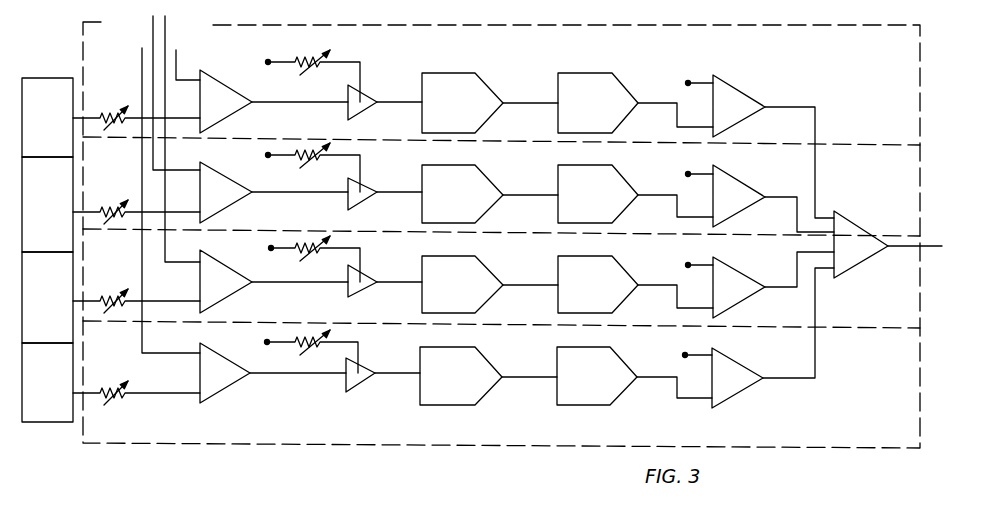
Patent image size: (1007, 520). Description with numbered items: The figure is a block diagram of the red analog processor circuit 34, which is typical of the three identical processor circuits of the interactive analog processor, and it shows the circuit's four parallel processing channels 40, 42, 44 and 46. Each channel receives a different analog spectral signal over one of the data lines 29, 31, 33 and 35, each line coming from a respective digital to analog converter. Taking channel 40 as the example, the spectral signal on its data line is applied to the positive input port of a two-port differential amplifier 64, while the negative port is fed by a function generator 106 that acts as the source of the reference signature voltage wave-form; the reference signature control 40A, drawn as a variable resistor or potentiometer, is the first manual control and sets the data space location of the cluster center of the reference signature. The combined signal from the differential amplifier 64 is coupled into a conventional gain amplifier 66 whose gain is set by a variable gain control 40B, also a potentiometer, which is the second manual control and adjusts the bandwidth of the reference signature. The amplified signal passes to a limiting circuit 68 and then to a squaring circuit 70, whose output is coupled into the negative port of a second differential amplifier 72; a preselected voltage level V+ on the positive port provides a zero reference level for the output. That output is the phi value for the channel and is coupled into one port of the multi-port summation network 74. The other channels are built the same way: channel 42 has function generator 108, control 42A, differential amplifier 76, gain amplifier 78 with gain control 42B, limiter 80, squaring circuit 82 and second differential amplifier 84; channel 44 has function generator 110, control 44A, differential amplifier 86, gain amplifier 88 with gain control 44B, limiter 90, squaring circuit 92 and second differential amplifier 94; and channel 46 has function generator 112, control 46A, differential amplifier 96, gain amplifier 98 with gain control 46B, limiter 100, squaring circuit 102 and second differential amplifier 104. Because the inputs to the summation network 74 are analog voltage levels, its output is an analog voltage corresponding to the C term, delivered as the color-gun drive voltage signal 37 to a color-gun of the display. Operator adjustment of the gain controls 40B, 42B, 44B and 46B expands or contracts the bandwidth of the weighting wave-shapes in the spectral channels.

The data line 29 is at (177, 62).
The data line 31 is at (165, 26).
The data line 33 is at (153, 24).
The data line 35 is at (142, 60).
The red processor circuit 34 is at (338, 458).
The color-gun drive voltage signal 37 is at (902, 248).
The parallel processing channel 40 is at (529, 53).
The parallel processing channel 42 is at (535, 177).
The parallel processing channel 44 is at (532, 268).
The parallel processing channel 46 is at (529, 350).
The reference signature control 40A is at (108, 116).
The reference signature control 42A is at (108, 210).
The reference signature control 44A is at (108, 299).
The reference signature control 46A is at (108, 390).
The variable gain control 40B is at (314, 70).
The gain control 42B is at (312, 163).
The gain control 44B is at (311, 257).
The gain control 46B is at (306, 350).
The two-port differential amplifier 64 is at (234, 118).
The gain amplifier 66 is at (366, 115).
The limiting circuit 68 is at (456, 97).
The squaring circuit 70 is at (590, 97).
The second differential amplifier 72 is at (738, 92).
The multi-port summation network 74 is at (860, 256).
The operational amplifier 76 is at (236, 208).
The buffer amplifier 78 is at (364, 205).
The limiter 80 is at (456, 188).
The squaring circuit 82 is at (592, 188).
The comparator 84 is at (750, 186).
The operational amplifier 86 is at (234, 299).
The buffer amplifier 88 is at (364, 293).
The limiter 90 is at (456, 280).
The squaring circuit 92 is at (592, 280).
The comparator 94 is at (743, 277).
The operational amplifier 96 is at (228, 388).
The buffer amplifier 98 is at (360, 383).
The limiter 100 is at (462, 371).
The squaring circuit 102 is at (598, 371).
The comparator 104 is at (742, 368).
The function generator 106 is at (43, 77).
The function generator 108 is at (60, 246).
The function generator 110 is at (60, 334).
The function generator 112 is at (67, 424).